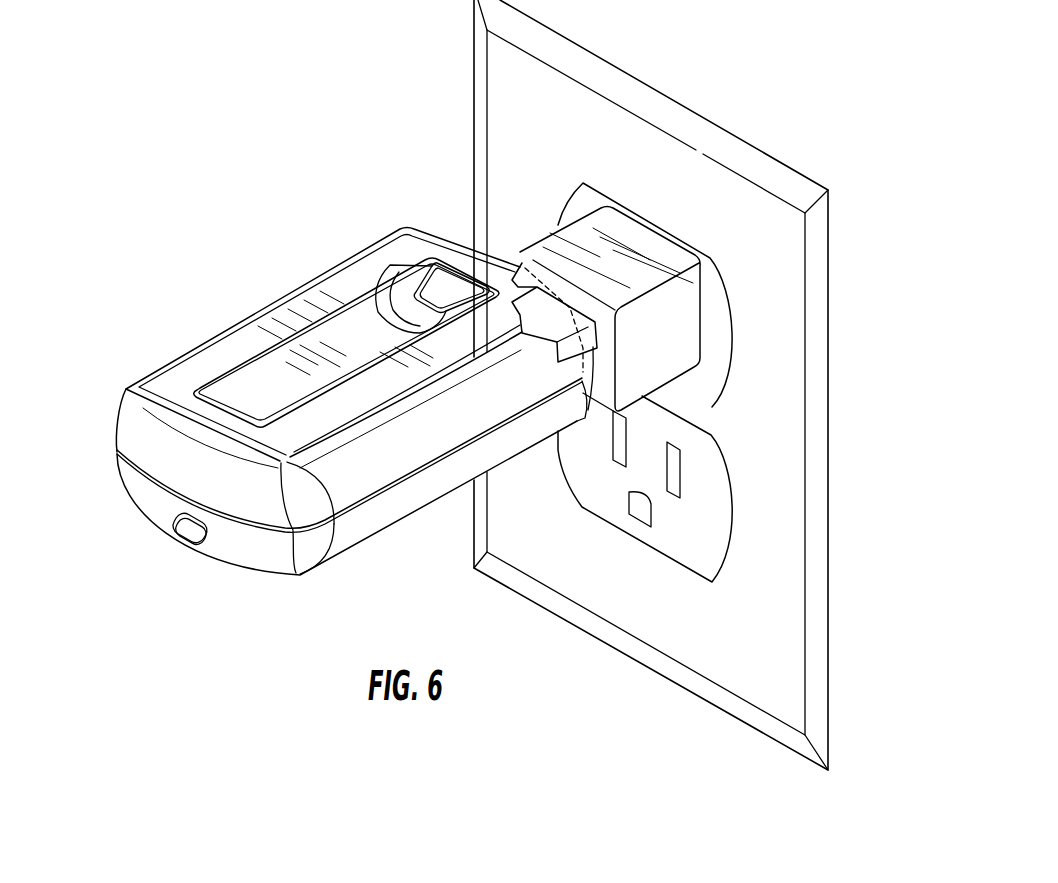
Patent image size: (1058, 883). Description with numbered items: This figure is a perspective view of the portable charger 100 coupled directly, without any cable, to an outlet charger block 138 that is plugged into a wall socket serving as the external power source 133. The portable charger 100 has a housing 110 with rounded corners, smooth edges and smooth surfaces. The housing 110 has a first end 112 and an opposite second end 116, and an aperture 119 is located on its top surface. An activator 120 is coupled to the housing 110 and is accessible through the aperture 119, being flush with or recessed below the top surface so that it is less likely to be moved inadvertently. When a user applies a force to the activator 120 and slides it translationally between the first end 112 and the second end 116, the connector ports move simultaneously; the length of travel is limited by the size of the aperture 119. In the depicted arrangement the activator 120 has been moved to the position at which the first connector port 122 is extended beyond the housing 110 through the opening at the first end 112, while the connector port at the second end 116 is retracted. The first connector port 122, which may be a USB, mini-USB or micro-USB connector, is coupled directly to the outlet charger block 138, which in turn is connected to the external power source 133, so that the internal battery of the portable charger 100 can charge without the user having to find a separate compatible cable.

The portable charger 100 is at (205, 238).
The housing 110 is at (155, 367).
The first end 112 is at (583, 391).
The second end 116 is at (138, 433).
The aperture 119 is at (273, 390).
The activator 120 is at (403, 310).
The first connector port 122 is at (551, 306).
The external power source 133 is at (768, 430).
The outlet charger block 138 is at (667, 332).